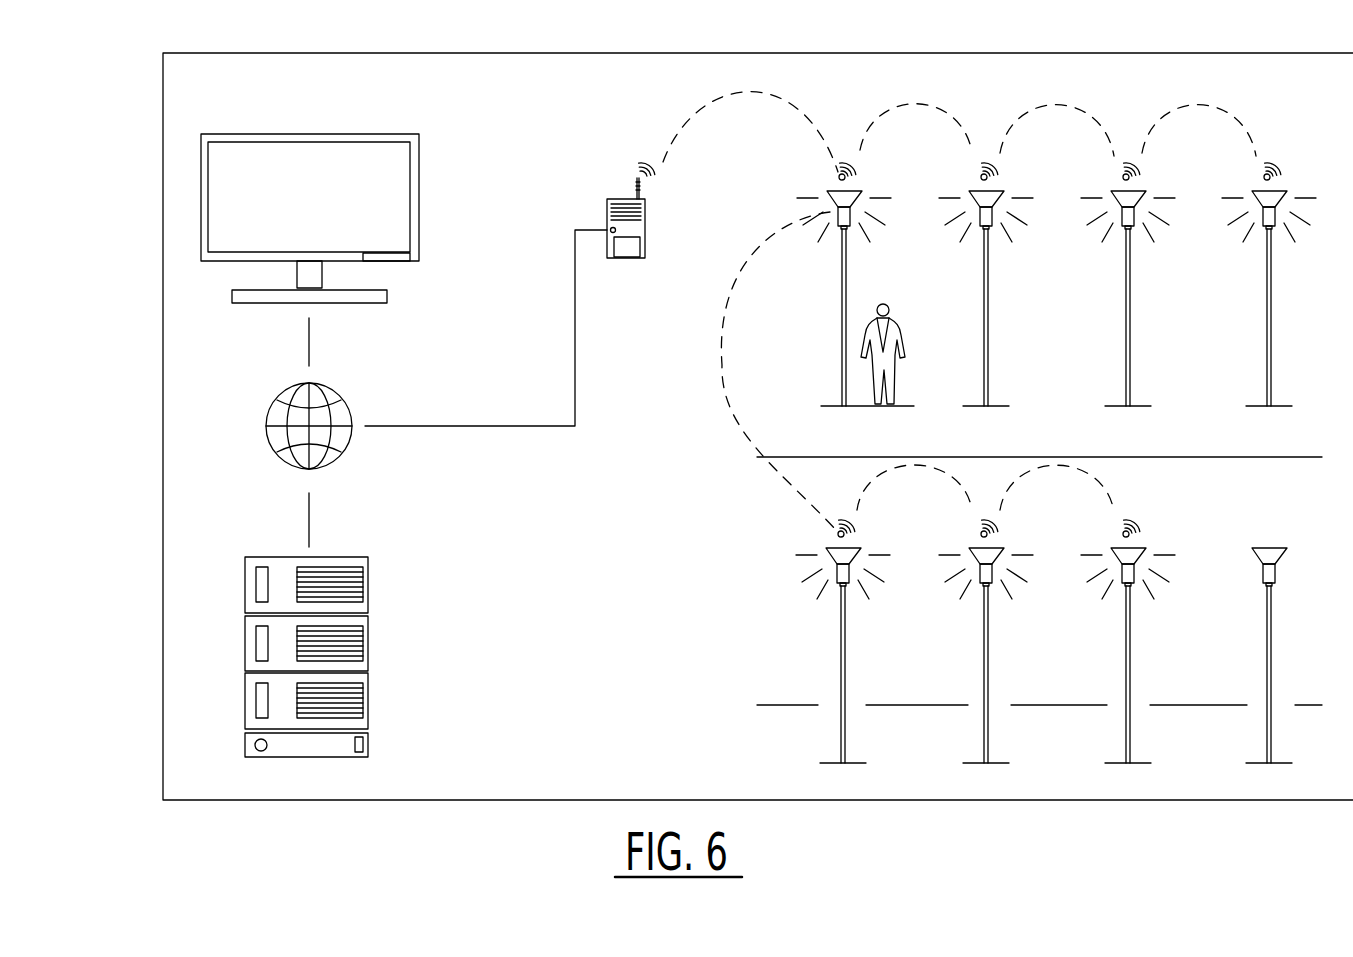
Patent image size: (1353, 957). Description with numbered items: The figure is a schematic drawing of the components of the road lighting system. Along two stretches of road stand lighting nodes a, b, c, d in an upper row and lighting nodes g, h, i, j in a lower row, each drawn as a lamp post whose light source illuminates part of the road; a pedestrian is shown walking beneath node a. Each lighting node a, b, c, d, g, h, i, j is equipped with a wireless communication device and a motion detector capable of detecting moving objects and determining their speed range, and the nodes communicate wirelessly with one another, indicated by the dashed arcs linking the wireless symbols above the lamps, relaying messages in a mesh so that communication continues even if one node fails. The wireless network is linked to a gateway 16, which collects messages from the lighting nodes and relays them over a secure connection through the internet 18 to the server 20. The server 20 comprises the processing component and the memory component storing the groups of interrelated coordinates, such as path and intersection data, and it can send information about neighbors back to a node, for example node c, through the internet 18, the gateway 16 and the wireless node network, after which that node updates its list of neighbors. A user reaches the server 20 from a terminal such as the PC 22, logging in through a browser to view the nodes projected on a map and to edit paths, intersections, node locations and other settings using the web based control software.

The PC 22 is at (398, 160).
The internet 18 is at (338, 440).
The server 20 is at (366, 650).
The gateway 16 is at (628, 248).
The lighting node a is at (820, 287).
The lighting node b is at (965, 276).
The lighting node c is at (1107, 281).
The lighting node d is at (1250, 281).
The lighting node g is at (824, 631).
The lighting node h is at (965, 632).
The lighting node i is at (1106, 635).
The lighting node j is at (1249, 638).